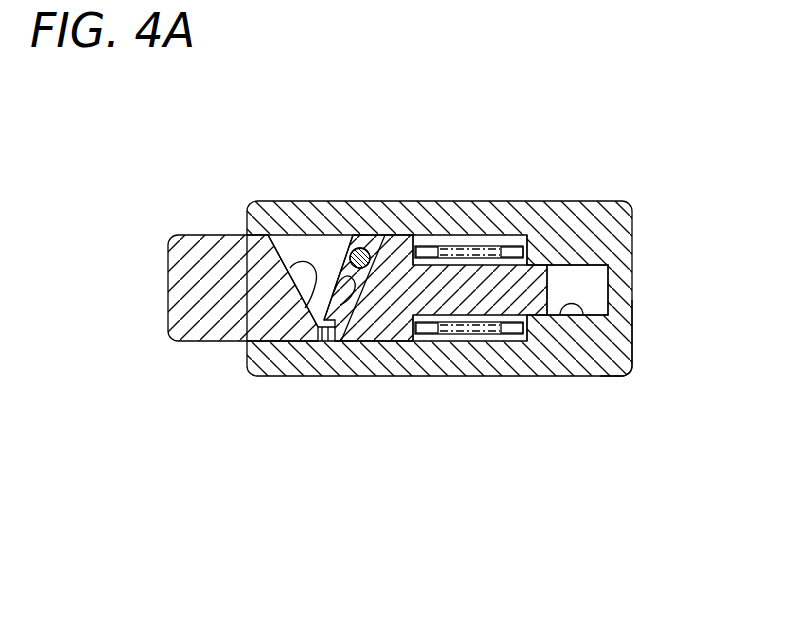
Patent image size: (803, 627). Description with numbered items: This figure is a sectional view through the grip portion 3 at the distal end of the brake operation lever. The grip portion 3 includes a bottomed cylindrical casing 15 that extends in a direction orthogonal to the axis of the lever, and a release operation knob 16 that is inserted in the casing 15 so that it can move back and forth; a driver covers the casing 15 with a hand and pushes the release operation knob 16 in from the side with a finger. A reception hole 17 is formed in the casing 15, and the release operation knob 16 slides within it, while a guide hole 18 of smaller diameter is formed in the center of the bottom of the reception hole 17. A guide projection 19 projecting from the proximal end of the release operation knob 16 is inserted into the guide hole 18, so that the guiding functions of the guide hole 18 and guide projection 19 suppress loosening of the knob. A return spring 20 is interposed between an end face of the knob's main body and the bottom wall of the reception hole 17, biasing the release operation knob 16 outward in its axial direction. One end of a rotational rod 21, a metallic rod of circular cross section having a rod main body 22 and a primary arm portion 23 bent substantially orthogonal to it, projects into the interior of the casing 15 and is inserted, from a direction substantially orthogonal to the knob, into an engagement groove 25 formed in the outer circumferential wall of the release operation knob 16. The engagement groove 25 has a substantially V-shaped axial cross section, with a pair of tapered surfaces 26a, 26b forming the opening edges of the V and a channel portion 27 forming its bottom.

The grip portion 3 is at (608, 203).
The casing 15 is at (613, 365).
The release operation knob 16 is at (168, 307).
The reception hole 17 is at (491, 334).
The guide hole 18 is at (561, 317).
The guide projection 19 is at (528, 252).
The return spring 20 is at (505, 246).
The rotational rod 21 is at (333, 238).
The rod main body 22 is at (361, 248).
The primary arm portion 23 is at (328, 341).
The engagement groove 25 is at (292, 253).
The tapered surface 26a is at (285, 330).
The tapered surface 26b is at (358, 340).
The channel portion 27 is at (337, 308).